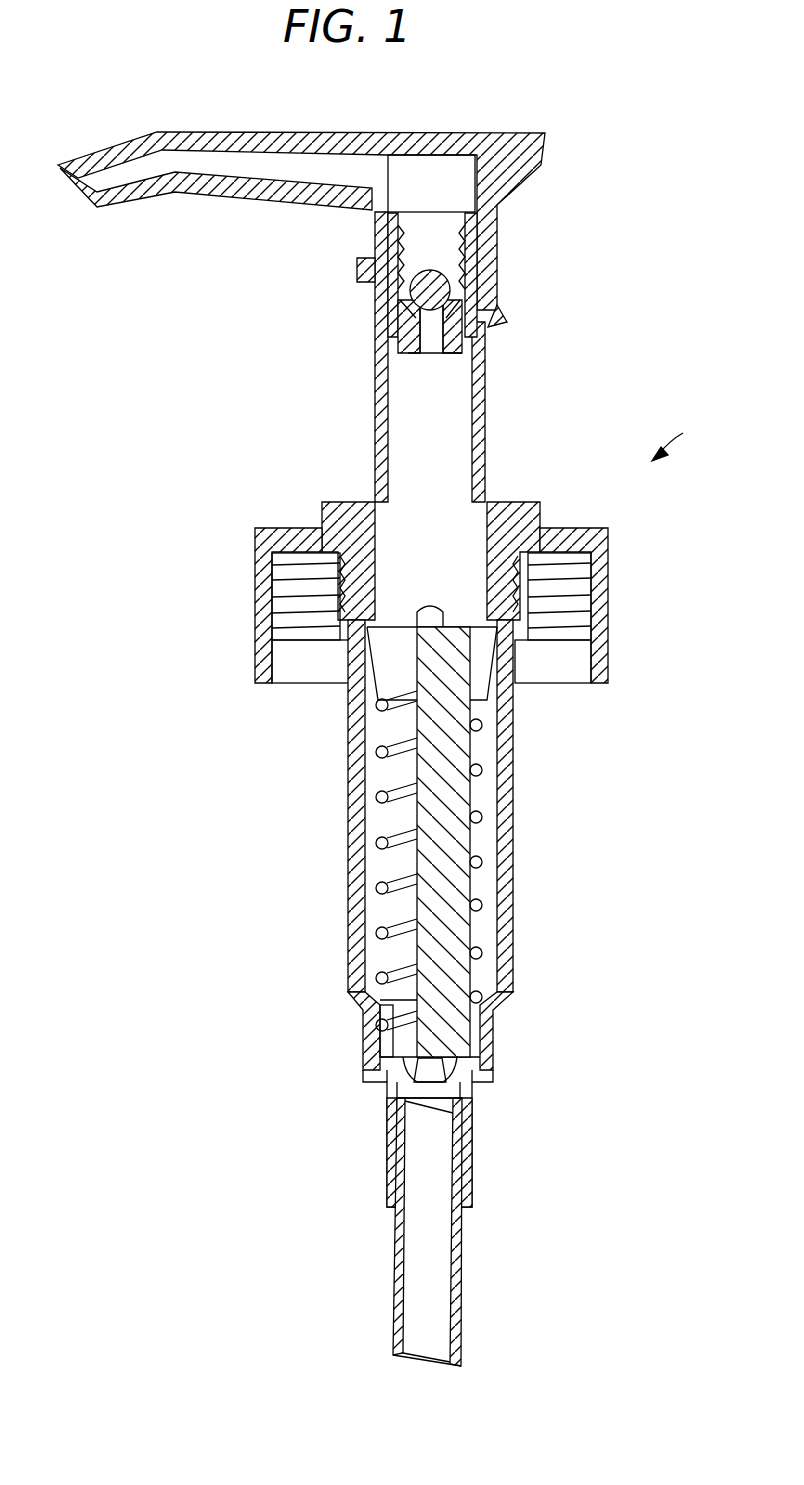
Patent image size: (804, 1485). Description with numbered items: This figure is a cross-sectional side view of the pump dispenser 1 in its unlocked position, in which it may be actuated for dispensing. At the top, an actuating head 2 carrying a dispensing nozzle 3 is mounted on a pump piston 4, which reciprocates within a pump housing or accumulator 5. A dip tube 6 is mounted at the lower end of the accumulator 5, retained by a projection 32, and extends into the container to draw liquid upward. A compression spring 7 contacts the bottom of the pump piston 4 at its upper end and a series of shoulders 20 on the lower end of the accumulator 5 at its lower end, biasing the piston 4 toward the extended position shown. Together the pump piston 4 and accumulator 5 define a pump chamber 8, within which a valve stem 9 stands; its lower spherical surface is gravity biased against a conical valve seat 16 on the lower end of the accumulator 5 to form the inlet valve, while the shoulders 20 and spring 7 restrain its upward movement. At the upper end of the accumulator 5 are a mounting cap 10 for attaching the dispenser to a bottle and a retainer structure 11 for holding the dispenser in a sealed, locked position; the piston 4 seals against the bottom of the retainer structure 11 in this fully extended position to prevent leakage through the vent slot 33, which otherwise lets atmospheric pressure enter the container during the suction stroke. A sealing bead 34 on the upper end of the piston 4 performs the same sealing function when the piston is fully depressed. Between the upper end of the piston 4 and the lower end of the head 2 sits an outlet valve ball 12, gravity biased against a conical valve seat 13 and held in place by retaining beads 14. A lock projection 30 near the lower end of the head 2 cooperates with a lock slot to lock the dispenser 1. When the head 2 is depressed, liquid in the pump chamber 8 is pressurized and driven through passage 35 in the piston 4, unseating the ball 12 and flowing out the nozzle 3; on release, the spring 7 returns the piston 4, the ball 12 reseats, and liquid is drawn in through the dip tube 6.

The pump dispenser 1 is at (703, 445).
The actuating head 2 is at (333, 136).
The dispensing nozzle 3 is at (93, 193).
The pump piston 4 is at (377, 442).
The accumulator 5 is at (347, 773).
The dip tube 6 is at (397, 1253).
The compression spring 7 is at (480, 768).
The pump chamber 8 is at (405, 857).
The valve stem 9 is at (410, 950).
The mounting cap 10 is at (256, 601).
The retainer structure 11 is at (533, 507).
The outlet valve ball 12 is at (436, 272).
The conical valve seat 13 is at (397, 310).
The retaining beads 14 is at (392, 246).
The conical valve seat 16 is at (462, 1070).
The shoulders 20 is at (380, 1043).
The lock projection 30 is at (358, 280).
The projection 32 is at (395, 1130).
The vent slot 33 is at (507, 645).
The sealing bead 34 is at (492, 325).
The passage 35 is at (432, 338).